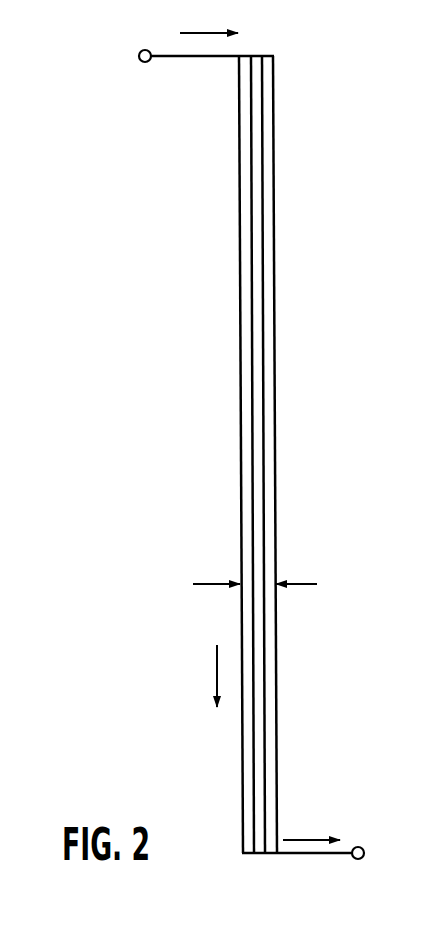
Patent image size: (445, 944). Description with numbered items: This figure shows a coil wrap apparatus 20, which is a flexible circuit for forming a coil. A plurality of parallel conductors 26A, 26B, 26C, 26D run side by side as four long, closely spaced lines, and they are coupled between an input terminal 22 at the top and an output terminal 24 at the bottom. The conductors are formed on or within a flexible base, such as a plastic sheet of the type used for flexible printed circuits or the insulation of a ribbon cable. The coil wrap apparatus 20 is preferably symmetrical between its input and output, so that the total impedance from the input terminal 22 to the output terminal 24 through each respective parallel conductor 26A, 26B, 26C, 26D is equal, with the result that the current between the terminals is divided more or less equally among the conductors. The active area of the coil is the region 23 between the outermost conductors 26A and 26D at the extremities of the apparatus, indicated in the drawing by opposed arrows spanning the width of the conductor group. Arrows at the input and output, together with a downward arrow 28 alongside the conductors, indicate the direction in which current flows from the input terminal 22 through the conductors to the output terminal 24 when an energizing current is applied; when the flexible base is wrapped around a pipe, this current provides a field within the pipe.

The coil wrap apparatus 20 is at (241, 454).
The input terminal 22 is at (138, 58).
The active area region 23 is at (273, 582).
The output terminal 24 is at (360, 847).
The parallel conductor 26A is at (240, 183).
The parallel conductor 26B is at (250, 222).
The parallel conductor 26C is at (263, 270).
The parallel conductor 26D is at (275, 332).
The direction of light propagation 28 is at (216, 662).